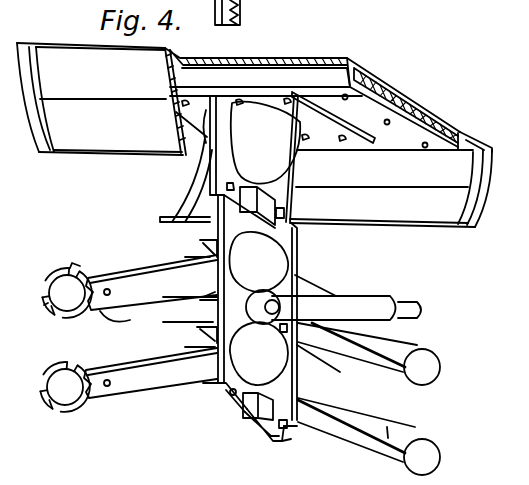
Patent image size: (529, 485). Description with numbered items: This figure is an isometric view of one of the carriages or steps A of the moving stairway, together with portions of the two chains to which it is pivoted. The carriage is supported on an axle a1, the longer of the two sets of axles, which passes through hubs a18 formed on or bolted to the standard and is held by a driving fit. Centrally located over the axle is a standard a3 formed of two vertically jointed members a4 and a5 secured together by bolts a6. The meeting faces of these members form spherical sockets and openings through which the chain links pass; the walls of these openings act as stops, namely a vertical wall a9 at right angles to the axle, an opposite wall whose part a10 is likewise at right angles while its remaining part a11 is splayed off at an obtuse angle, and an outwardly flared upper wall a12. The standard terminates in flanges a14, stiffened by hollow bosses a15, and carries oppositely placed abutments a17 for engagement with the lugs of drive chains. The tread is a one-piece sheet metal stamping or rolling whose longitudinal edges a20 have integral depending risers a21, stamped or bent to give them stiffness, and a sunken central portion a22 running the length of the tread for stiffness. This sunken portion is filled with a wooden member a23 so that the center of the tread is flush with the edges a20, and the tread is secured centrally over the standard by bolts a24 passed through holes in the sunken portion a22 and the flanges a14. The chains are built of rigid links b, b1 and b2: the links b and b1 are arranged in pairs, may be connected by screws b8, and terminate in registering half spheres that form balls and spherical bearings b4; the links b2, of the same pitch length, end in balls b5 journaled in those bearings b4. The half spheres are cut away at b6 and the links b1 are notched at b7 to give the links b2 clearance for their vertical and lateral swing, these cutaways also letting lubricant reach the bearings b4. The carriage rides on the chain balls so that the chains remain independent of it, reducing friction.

The carriage or step A is at (269, 46).
The axle a1 is at (335, 295).
The standard a3 is at (269, 258).
The standard member a4 is at (289, 431).
The standard member a5 is at (225, 406).
The bolt a6 is at (284, 213).
The vertical wall of opening a9 is at (178, 221).
The part of opposite vertical wall a10 is at (210, 240).
The splayed part of vertical wall a11 is at (200, 257).
The flared wall of opening a12 is at (175, 215).
The flange a14 is at (330, 120).
The hollow boss a15 is at (284, 160).
The abutment a17 is at (252, 436).
The hub a18 is at (298, 331).
The longitudinal edge of tread a20 is at (181, 60).
The riser a21 is at (86, 155).
The sunken central portion a22 is at (407, 118).
The wooden member a23 is at (382, 88).
The bolt a24 is at (182, 106).
The link b is at (152, 391).
The link b1 is at (114, 279).
The link b2 is at (382, 357).
The spherical socket or bearing b4 is at (62, 297).
The ball b5 is at (440, 375).
The cutaway portion b6 is at (48, 312).
The notch b7 is at (68, 272).
The screw b8 is at (107, 386).